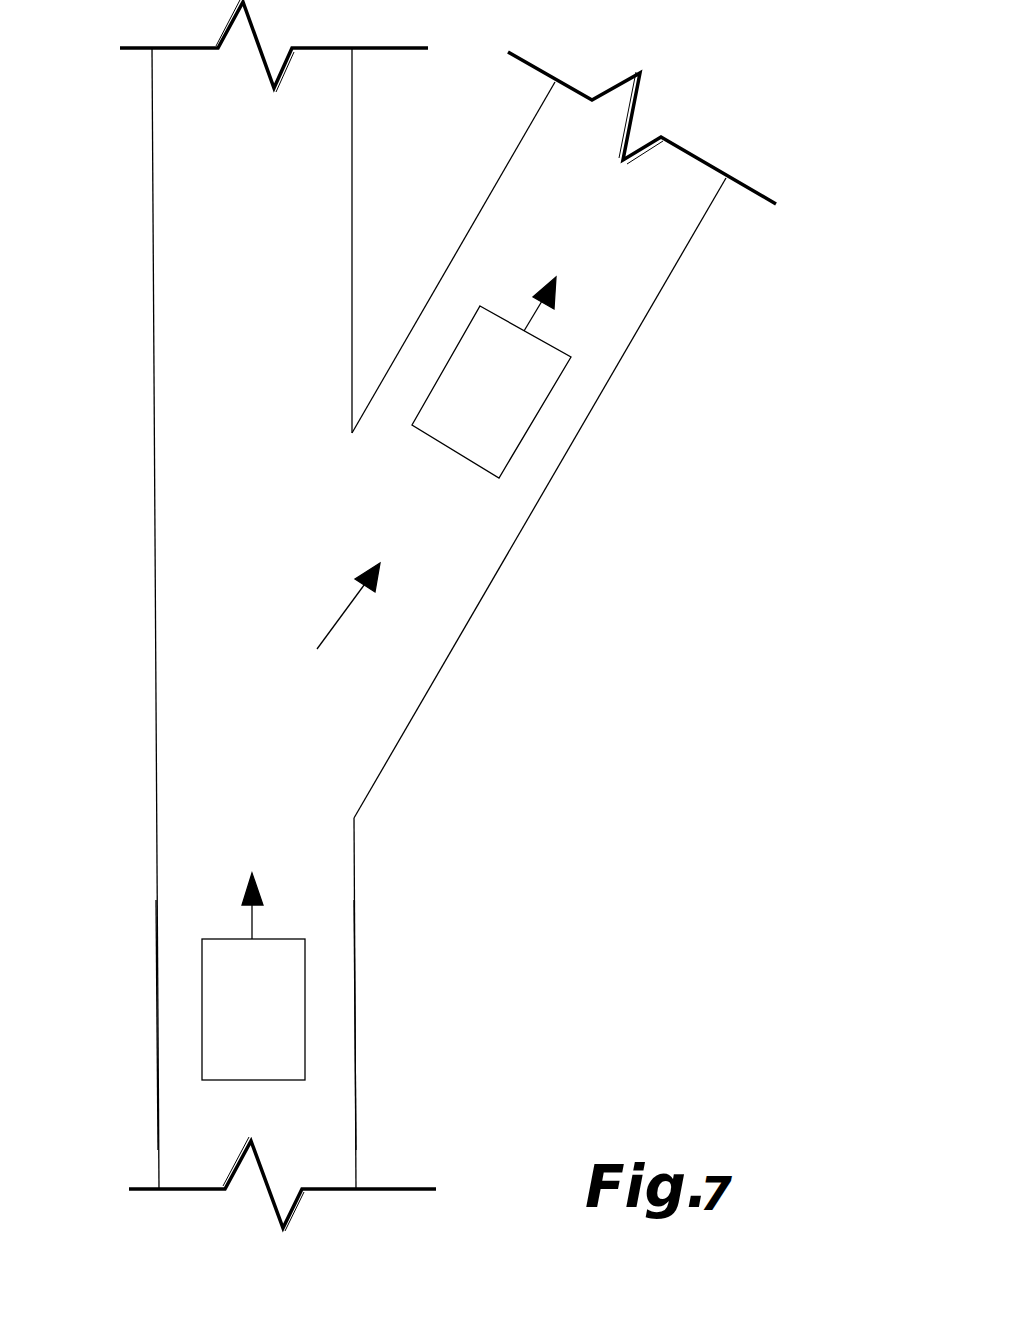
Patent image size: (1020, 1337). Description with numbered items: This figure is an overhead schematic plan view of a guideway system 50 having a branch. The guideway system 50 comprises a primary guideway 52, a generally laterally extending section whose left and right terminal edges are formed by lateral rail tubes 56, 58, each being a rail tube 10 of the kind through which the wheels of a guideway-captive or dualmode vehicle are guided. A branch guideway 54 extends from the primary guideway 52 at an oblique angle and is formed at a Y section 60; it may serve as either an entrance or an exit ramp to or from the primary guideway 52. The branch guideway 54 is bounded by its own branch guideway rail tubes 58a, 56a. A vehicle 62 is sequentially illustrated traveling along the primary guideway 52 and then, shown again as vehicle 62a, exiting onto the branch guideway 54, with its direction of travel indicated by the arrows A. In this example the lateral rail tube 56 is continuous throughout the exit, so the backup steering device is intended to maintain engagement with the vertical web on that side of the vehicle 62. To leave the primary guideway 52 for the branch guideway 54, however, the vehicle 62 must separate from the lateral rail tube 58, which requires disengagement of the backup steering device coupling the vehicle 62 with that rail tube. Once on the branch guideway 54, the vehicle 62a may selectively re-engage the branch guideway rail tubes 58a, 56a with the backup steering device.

The rail tube 10 is at (155, 683).
The guideway system 50 is at (668, 732).
The primary guideway 52 is at (400, 963).
The branch guideway 54 is at (637, 361).
The lateral rail tube 56 is at (355, 1055).
The branch guideway rail tube 56a is at (470, 613).
The lateral rail tube 58 is at (157, 1093).
The branch guideway rail tube 58a is at (492, 190).
The Y section 60 is at (330, 627).
The vehicle 62 is at (238, 1010).
The vehicle 62a is at (472, 401).
The arrows A is at (532, 310).